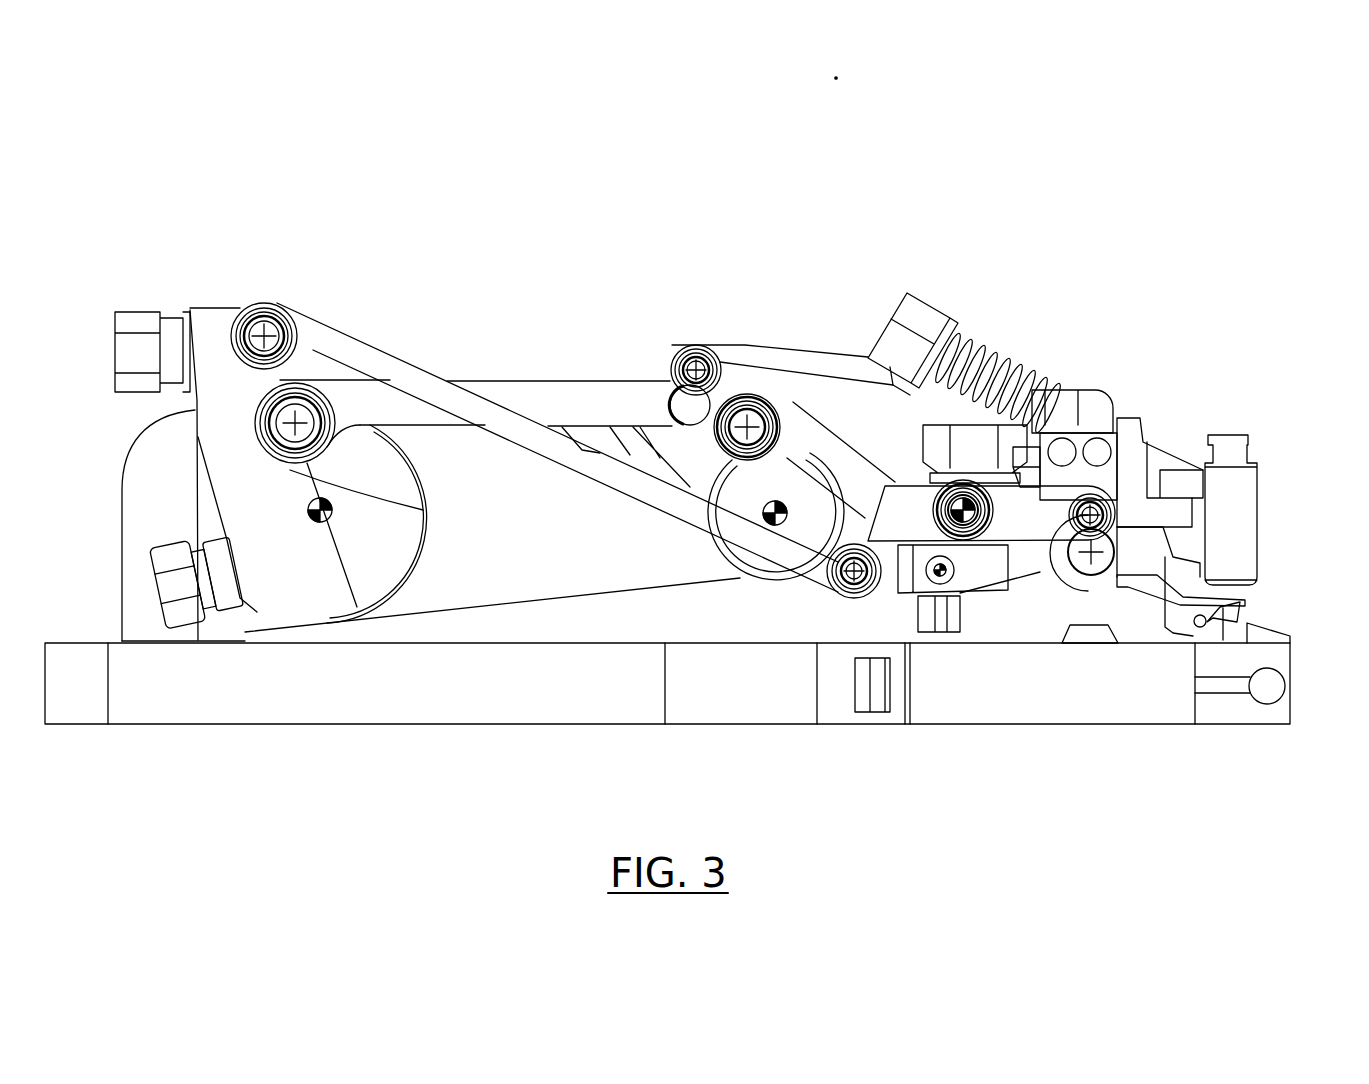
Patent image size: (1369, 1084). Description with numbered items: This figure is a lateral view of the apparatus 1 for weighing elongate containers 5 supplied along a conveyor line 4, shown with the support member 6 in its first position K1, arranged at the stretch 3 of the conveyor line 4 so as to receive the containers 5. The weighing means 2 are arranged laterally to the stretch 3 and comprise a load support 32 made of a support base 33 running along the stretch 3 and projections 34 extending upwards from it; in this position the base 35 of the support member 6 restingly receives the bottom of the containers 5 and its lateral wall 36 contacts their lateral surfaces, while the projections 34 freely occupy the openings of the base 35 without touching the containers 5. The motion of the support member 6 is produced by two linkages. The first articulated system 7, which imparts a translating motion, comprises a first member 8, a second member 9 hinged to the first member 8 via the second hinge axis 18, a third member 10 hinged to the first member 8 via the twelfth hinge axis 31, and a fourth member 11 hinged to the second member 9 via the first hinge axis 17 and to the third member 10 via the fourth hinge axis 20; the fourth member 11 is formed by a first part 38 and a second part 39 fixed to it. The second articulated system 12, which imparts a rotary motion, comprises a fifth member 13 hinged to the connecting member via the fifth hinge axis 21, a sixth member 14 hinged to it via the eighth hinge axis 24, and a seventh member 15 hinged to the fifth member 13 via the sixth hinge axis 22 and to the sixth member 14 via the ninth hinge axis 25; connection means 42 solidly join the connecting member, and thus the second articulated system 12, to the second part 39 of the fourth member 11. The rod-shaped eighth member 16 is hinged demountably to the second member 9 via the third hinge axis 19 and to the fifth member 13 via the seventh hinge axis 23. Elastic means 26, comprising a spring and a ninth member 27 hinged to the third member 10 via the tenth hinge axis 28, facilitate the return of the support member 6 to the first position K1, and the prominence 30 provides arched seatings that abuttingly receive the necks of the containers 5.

The apparatus 1 is at (1142, 212).
The weighing means 2 is at (1292, 602).
The stretch 3 is at (1262, 380).
The conveyor line 4 is at (1236, 350).
The containers 5 is at (1233, 493).
The support member 6 is at (1137, 597).
The first articulated system 7 is at (455, 227).
The first member 8 is at (505, 578).
The second member 9 is at (275, 580).
The third member 10 is at (685, 458).
The fourth member 11 is at (518, 370).
The second articulated system 12 is at (1013, 240).
The fifth member 13 is at (868, 535).
The sixth member 14 is at (985, 565).
The seventh member 15 is at (1108, 575).
The eighth member 16 is at (387, 370).
The first hinge axis 17 is at (283, 436).
The second hinge axis 18 is at (315, 530).
The third hinge axis 19 is at (255, 328).
The fourth hinge axis 20 is at (745, 418).
The fifth hinge axis 21 is at (950, 500).
The sixth hinge axis 22 is at (1077, 518).
The seventh hinge axis 23 is at (850, 585).
The eighth hinge axis 24 is at (937, 584).
The ninth hinge axis 25 is at (1083, 562).
The elastic means 26 is at (1022, 340).
The ninth member 27 is at (838, 370).
The tenth hinge axis 28 is at (688, 363).
The prominence 30 is at (1182, 468).
The twelfth hinge axis 31 is at (768, 530).
The load support 32 is at (1250, 615).
The support base 33 is at (1232, 610).
The projections 34 is at (1190, 580).
The base 35 is at (1157, 590).
The lateral wall 36 is at (1192, 523).
The first part 38 is at (570, 393).
The second part 39 is at (818, 445).
The connection means 42 is at (968, 435).
The first position K1 is at (1287, 415).